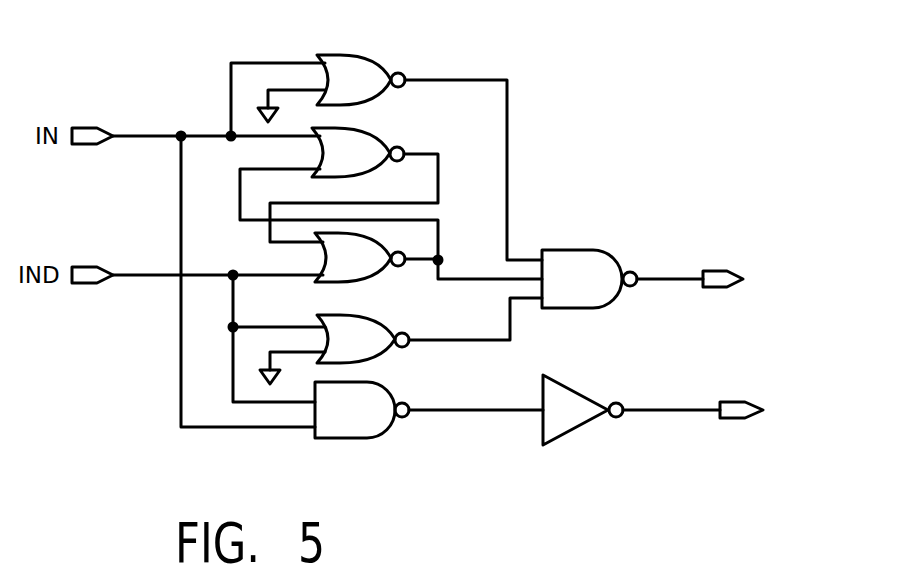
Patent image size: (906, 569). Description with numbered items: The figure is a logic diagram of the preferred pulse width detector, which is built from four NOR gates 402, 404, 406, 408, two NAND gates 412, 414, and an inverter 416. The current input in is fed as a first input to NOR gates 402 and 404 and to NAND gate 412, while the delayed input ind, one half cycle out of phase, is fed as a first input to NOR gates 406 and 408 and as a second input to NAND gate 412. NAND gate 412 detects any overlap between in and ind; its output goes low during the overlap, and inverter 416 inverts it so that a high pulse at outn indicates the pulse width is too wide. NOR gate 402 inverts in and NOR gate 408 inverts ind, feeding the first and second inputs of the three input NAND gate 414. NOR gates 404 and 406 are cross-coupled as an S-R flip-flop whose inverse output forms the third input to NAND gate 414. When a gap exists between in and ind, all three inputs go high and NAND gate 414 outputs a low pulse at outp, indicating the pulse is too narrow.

The NOR gate 402 is at (370, 60).
The NOR gate 404 is at (377, 138).
The NOR gate 406 is at (370, 283).
The NOR gate 408 is at (388, 353).
The NAND gate 412 is at (377, 435).
The three input NAND gate 414 is at (562, 250).
The inverter 416 is at (563, 438).